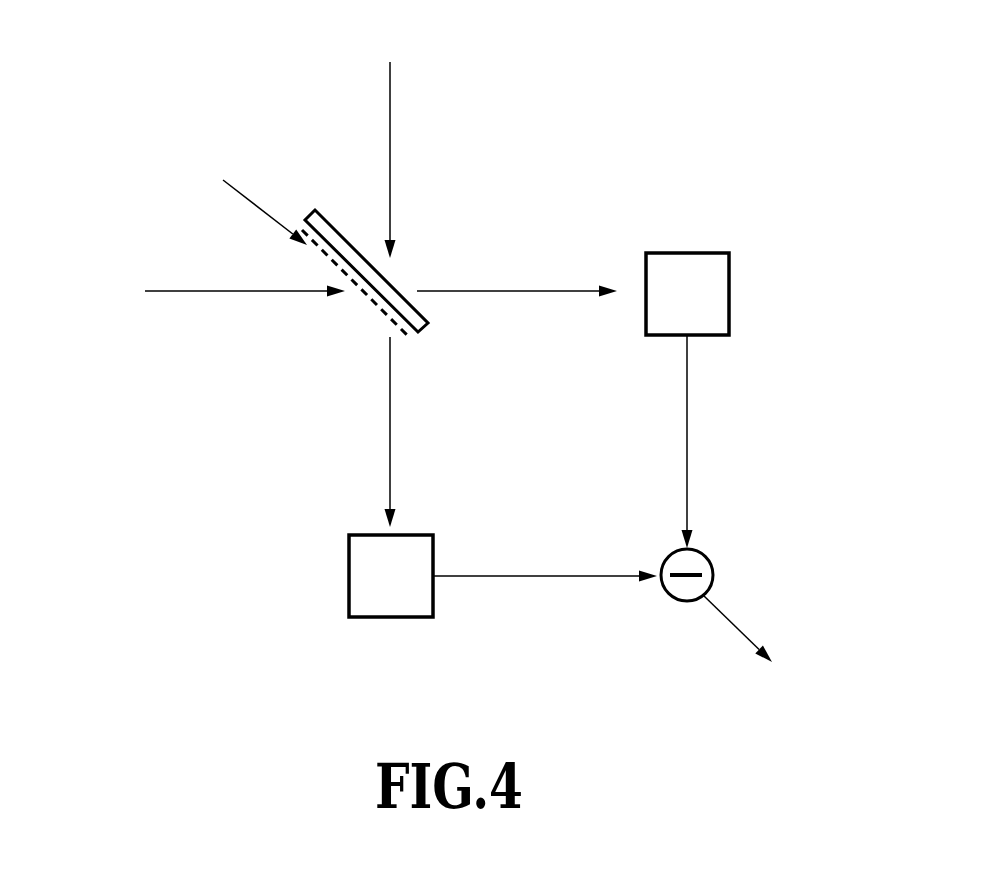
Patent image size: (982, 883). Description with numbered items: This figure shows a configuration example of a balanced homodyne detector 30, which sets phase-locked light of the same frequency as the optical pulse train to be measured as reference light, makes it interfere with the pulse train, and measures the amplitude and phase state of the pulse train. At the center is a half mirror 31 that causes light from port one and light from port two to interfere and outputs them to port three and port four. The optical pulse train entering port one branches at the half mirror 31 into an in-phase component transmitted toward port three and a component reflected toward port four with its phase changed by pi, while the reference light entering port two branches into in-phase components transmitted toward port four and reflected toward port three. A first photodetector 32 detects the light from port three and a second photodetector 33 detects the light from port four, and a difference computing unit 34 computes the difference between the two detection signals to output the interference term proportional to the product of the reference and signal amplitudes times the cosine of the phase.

The balanced homodyne detector 30 is at (749, 80).
The half mirror 31 is at (427, 317).
The first photodetector 32 is at (729, 293).
The second photodetector 33 is at (433, 558).
The difference computing unit 34 is at (713, 575).